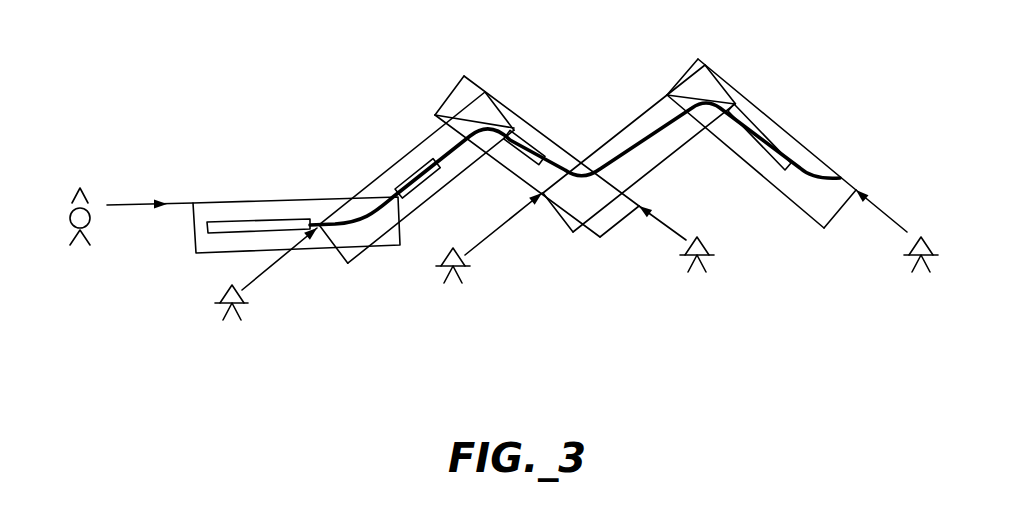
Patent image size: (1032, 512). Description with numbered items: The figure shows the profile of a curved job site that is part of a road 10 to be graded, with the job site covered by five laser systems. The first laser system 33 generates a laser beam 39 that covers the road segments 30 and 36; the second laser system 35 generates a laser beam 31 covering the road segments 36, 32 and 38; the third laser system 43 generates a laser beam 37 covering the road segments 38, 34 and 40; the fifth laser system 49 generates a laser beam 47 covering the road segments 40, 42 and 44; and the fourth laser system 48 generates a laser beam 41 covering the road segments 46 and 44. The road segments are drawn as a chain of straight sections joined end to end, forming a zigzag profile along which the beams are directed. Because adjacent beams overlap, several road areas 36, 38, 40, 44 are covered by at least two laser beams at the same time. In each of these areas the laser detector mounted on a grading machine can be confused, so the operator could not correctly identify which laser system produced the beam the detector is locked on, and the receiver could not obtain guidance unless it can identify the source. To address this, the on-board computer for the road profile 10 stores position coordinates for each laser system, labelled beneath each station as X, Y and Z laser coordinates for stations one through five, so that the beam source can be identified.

The road 10 is at (324, 107).
The road segment 30 is at (242, 198).
The laser beam 31 is at (266, 273).
The road segment 32 is at (441, 190).
The laser system #1 33 is at (107, 281).
The road segment 34 is at (537, 130).
The laser system #2 35 is at (256, 368).
The road area 36 is at (350, 264).
The laser beam 37 is at (673, 229).
The road area 38 is at (503, 103).
The laser beam 39 is at (178, 203).
The road area 40 is at (582, 234).
The laser beam 41 is at (900, 227).
The road segment 42 is at (678, 152).
The laser system #3 43 is at (723, 317).
The road area 44 is at (741, 92).
The road segment 46 is at (796, 162).
The laser beam 47 is at (491, 236).
The laser system #4 48 is at (895, 317).
The laser system #5 49 is at (478, 329).